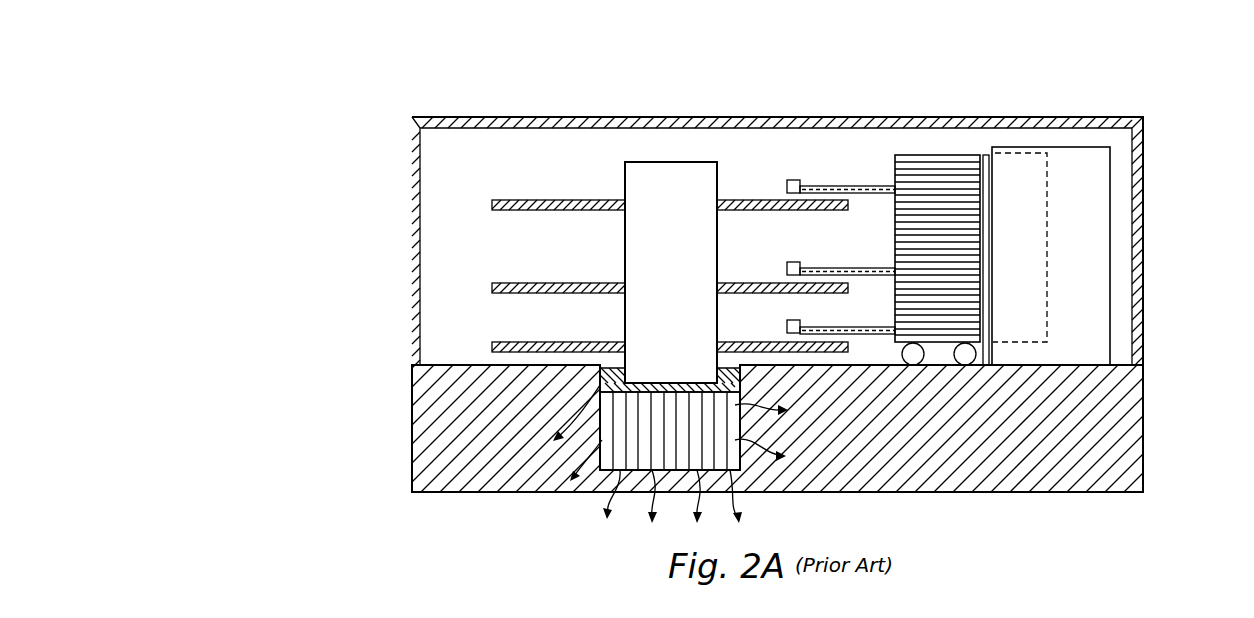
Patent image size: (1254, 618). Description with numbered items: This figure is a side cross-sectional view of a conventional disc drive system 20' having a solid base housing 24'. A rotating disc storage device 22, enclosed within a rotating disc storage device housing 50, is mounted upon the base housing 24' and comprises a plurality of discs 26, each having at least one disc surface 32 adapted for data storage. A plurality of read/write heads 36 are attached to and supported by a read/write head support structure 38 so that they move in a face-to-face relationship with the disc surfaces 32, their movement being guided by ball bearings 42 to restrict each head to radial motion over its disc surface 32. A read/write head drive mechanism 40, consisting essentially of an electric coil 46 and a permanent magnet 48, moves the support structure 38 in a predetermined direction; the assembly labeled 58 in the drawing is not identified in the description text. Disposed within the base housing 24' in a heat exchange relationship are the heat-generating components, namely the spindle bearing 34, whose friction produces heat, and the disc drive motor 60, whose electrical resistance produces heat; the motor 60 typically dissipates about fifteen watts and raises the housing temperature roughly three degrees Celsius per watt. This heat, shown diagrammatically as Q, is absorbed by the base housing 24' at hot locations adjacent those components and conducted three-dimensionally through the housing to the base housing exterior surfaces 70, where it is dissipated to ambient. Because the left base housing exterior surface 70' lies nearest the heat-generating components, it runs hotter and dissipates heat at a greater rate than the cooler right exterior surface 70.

The disc drive system 20' is at (744, 200).
The rotating disc storage device 22 is at (480, 180).
The base housing 24' is at (777, 459).
The discs 26 is at (642, 247).
The disc surface 32 is at (538, 200).
The spindle bearing 34 is at (612, 368).
The read/write heads 36 is at (787, 182).
The read/write head support structure 38 is at (856, 327).
The read/write head drive mechanism 40 is at (928, 155).
The ball bearings 42 is at (901, 352).
The electric coil 46 is at (986, 155).
The permanent magnet 48 is at (1086, 147).
The rotating disc storage device housing 50 is at (943, 128).
The cooling unit assembly 58 is at (988, 204).
The disc drive motor 60 is at (740, 470).
The base housing exterior surface 70 is at (918, 477).
The left base housing exterior surface 70' is at (468, 433).